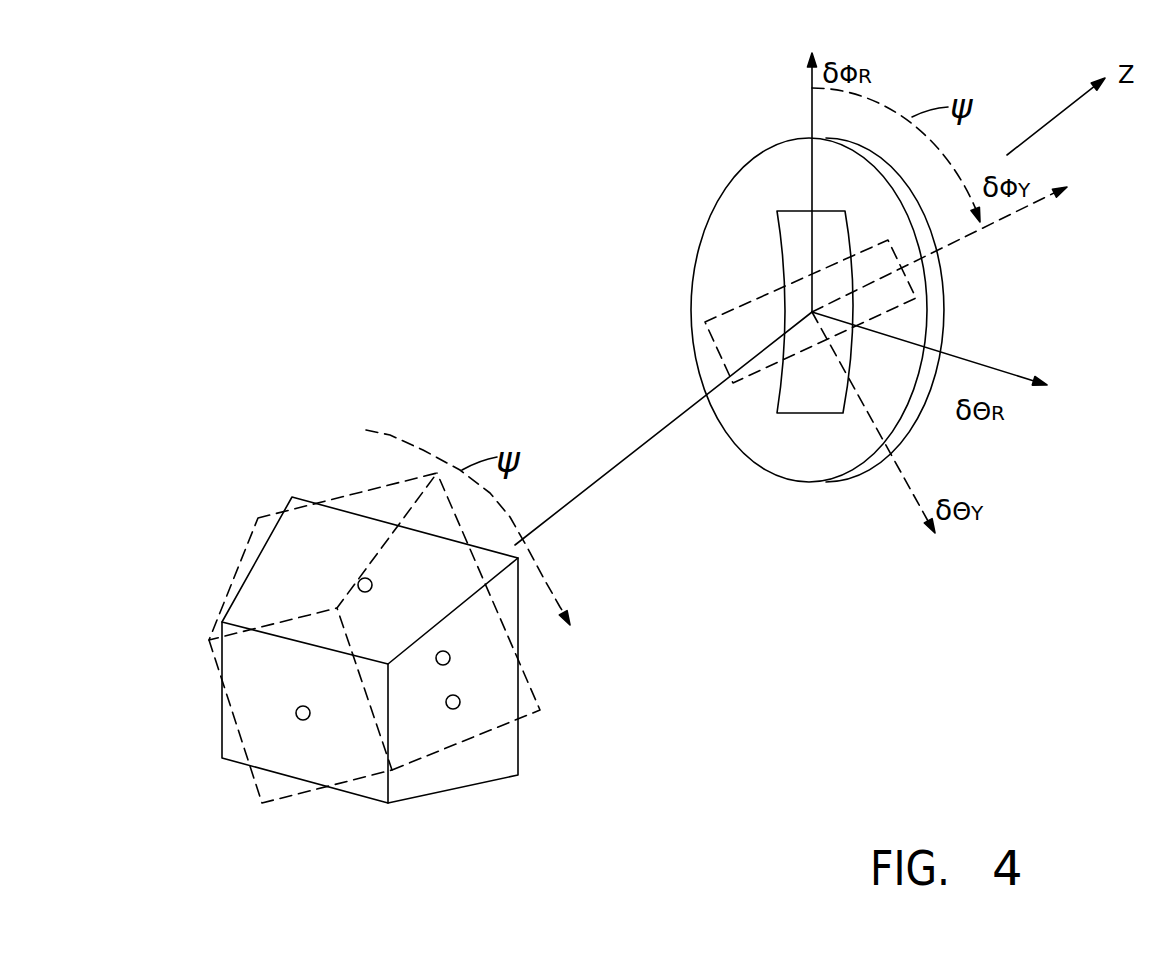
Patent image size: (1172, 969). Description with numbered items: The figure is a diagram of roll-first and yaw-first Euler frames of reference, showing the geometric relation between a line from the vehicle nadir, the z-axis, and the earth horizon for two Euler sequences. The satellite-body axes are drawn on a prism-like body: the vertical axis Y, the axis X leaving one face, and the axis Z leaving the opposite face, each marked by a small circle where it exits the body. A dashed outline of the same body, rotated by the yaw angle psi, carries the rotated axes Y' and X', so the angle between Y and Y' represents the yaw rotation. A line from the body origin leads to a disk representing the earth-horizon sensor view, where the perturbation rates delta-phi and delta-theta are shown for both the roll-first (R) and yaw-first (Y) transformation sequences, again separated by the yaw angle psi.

The X axis of prism X is at (565, 747).
The -Y axis of prism Y is at (346, 481).
The Z axis of prism Z is at (297, 718).
The rotated -Y' axis Y' is at (559, 638).
The rotated X' axis X' is at (435, 856).